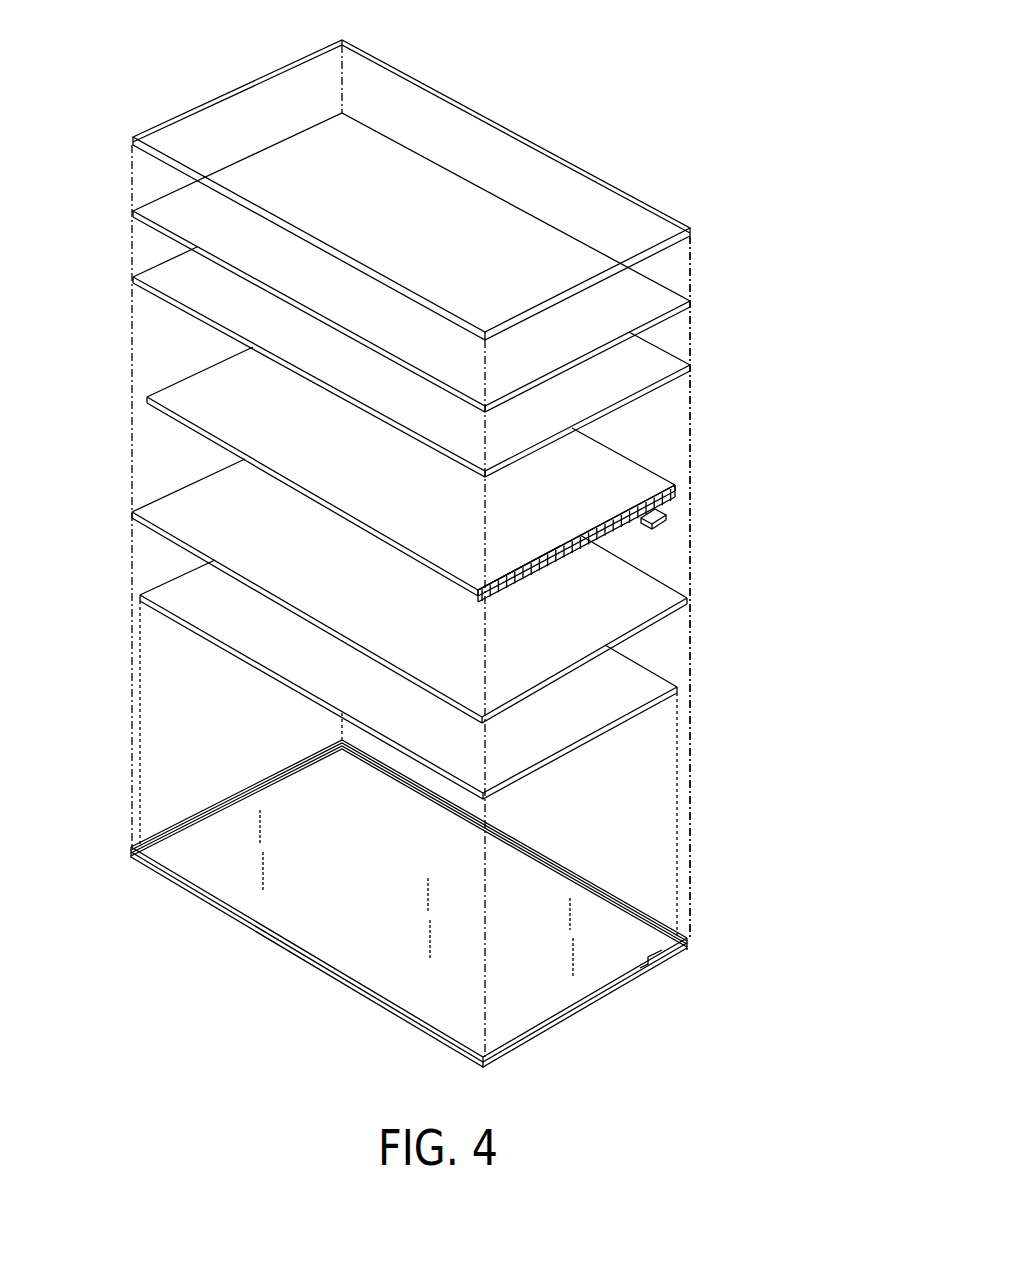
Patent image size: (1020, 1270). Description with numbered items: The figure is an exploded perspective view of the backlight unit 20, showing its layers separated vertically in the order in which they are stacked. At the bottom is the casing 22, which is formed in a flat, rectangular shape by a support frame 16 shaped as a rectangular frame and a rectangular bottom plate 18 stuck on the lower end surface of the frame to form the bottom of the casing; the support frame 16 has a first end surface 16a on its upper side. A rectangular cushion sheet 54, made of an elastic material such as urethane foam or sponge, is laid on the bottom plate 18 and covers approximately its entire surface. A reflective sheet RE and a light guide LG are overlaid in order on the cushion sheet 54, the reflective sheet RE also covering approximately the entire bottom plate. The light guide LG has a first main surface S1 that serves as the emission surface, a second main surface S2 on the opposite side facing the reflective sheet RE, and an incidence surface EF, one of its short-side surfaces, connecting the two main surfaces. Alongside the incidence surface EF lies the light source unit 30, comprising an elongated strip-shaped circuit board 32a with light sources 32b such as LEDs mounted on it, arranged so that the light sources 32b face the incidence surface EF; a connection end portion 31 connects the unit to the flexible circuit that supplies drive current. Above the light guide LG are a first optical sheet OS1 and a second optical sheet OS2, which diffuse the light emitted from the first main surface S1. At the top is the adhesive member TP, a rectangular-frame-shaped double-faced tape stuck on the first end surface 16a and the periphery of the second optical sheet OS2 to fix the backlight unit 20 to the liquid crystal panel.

The adhesive member TP is at (440, 97).
The second optical sheet OS2 is at (228, 240).
The first optical sheet OS1 is at (218, 305).
The light guide LG is at (411, 495).
The first main surface S1 is at (395, 517).
The second main surface S2 is at (313, 507).
The incidence surface EF is at (490, 600).
The reflective sheet RE is at (176, 520).
The cushion sheet 54 is at (216, 626).
The backlight unit 20 is at (742, 479).
The light source unit 30 is at (617, 549).
The connection end portion 31 is at (663, 503).
The circuit board 32a is at (645, 531).
The light sources 32b is at (614, 519).
The casing 22 is at (381, 904).
The support frame 16 is at (167, 878).
The first end surface 16a is at (272, 933).
The bottom plate 18 is at (232, 878).